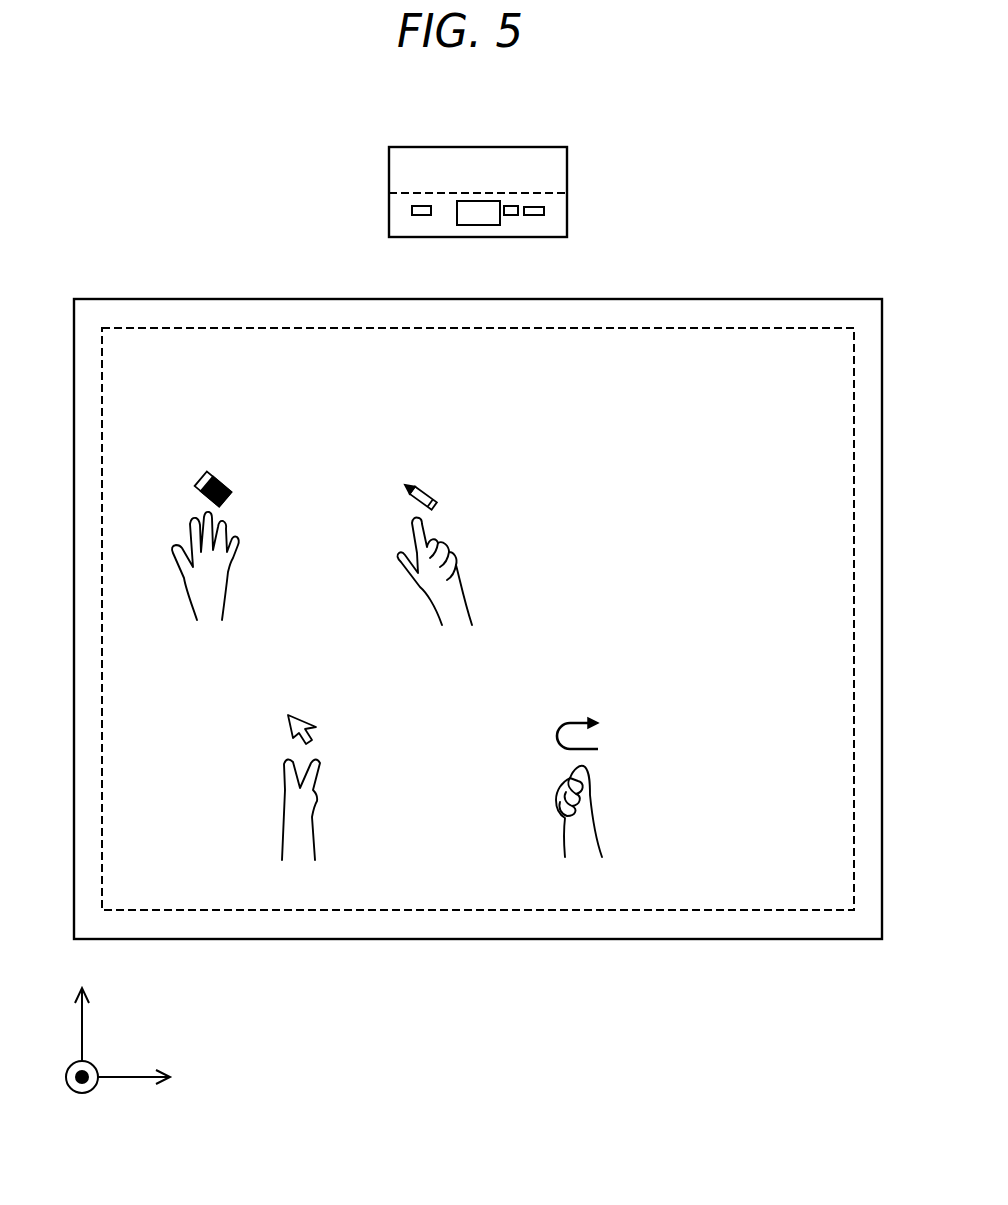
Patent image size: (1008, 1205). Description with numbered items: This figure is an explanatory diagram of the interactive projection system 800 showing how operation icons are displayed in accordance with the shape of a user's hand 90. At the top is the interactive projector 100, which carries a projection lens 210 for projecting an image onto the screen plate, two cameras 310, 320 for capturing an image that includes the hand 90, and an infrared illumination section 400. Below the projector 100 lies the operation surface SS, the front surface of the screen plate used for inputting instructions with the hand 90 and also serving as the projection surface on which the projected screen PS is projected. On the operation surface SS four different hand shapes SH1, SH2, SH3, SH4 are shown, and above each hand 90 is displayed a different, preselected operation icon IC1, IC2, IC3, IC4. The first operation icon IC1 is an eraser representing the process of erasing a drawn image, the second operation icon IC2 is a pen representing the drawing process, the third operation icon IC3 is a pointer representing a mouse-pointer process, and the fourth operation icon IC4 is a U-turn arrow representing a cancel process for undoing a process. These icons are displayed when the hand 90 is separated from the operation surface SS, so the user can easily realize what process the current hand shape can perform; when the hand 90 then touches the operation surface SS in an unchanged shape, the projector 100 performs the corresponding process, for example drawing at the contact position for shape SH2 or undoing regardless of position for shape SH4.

The interactive projection system 800 is at (793, 123).
The interactive projector 100 is at (567, 163).
The projection lens 210 is at (475, 201).
The camera 310 is at (422, 216).
The camera 320 is at (533, 217).
The infrared illumination section 400 is at (510, 206).
The operation surface SS is at (120, 298).
The projected screen PS is at (168, 327).
The first operation icon IC1 is at (217, 477).
The second operation icon IC2 is at (418, 483).
The third operation icon IC3 is at (307, 712).
The fourth operation icon IC4 is at (567, 722).
The hand 90 is at (359, 710).
The first hand shape SH1 is at (183, 580).
The second hand shape SH2 is at (420, 590).
The third hand shape SH3 is at (283, 845).
The fourth hand shape SH4 is at (560, 835).